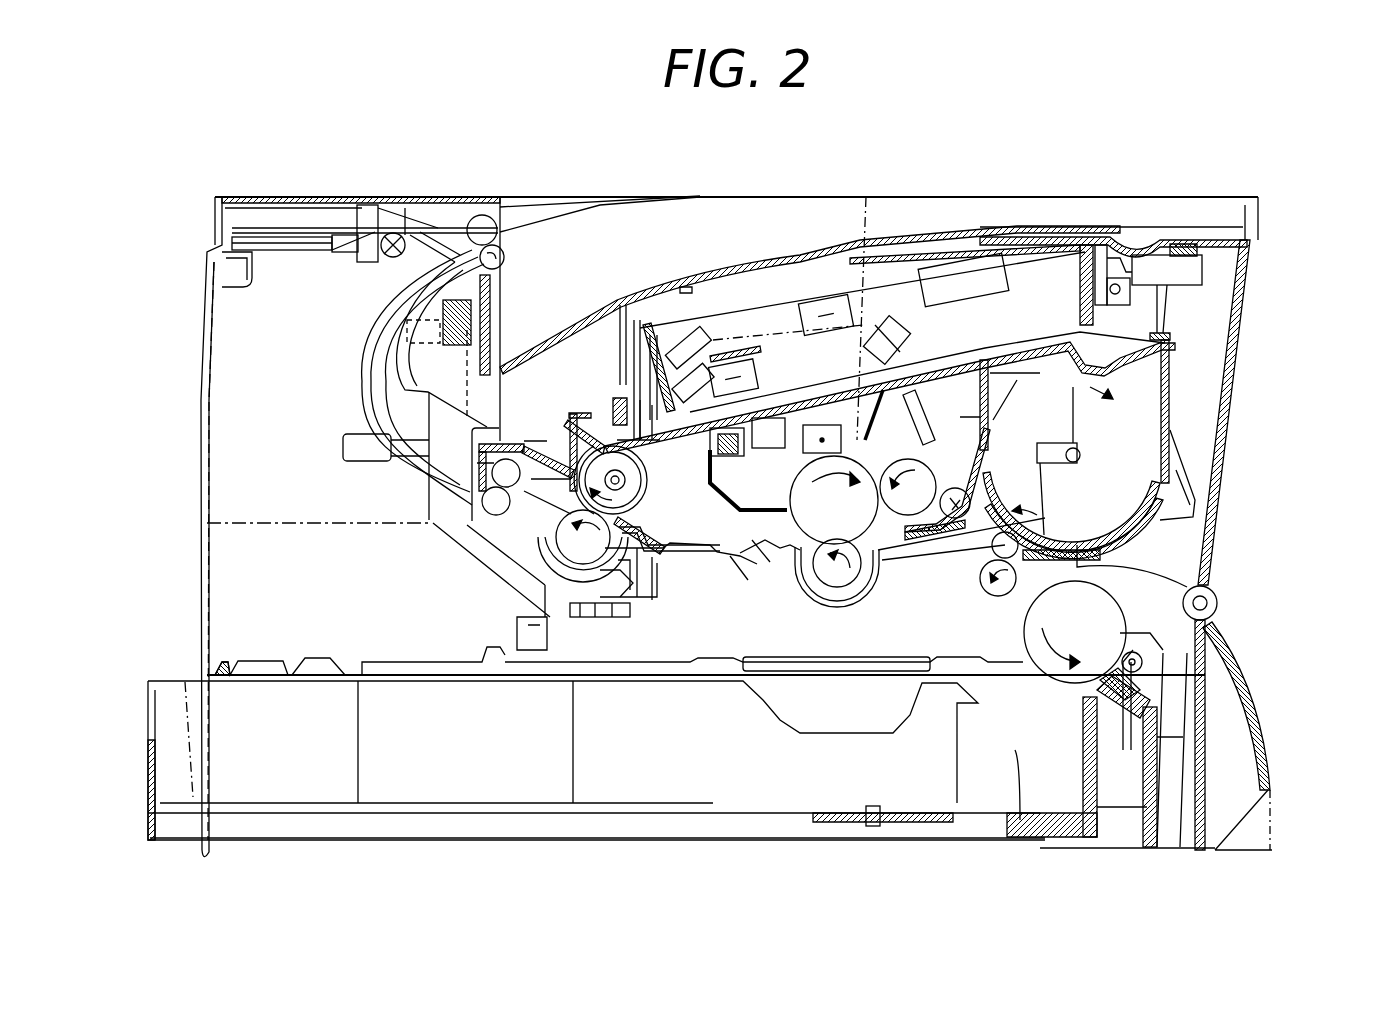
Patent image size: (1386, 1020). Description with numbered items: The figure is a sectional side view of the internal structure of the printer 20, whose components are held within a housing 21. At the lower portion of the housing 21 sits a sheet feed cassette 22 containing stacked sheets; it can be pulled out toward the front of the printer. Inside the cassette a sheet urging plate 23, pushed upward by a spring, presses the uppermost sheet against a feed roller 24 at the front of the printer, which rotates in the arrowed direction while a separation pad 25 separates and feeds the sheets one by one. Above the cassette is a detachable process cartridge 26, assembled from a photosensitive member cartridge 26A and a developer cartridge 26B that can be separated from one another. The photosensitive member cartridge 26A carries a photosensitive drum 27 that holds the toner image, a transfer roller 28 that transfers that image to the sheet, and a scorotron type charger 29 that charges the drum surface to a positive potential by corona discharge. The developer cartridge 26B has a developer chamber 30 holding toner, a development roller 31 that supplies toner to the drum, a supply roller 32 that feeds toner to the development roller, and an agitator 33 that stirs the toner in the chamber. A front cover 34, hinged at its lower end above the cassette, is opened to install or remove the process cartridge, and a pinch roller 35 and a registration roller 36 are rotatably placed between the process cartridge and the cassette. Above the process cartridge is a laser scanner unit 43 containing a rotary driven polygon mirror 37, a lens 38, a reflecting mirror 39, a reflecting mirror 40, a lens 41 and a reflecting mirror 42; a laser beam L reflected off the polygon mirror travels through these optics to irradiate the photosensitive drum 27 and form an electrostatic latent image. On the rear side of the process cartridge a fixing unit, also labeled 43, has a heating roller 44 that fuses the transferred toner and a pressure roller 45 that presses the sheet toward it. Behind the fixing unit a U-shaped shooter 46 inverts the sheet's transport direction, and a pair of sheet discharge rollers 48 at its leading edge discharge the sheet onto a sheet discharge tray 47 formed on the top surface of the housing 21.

The printer 20 is at (1062, 180).
The housing 21 is at (905, 197).
The sheet feed cassette 22 is at (1208, 805).
The sheet urging plate 23 is at (966, 835).
The feed roller 24 is at (1063, 680).
The separation pad 25 is at (1082, 685).
The process cartridge 26 is at (1183, 412).
The photosensitive member cartridge 26A is at (740, 553).
The developer cartridge 26B is at (1167, 367).
The photosensitive drum 27 is at (793, 553).
The transfer roller 28 is at (836, 582).
The scorotron type charger 29 is at (798, 462).
The developer chamber 30 is at (1145, 392).
The development roller 31 is at (935, 470).
The supply roller 32 is at (987, 483).
The agitator 33 is at (1050, 505).
The front cover 34 is at (1247, 367).
The pinch roller 35 is at (993, 548).
The registration roller 36 is at (987, 590).
The polygon mirror 37 is at (968, 293).
The lens 38 is at (833, 297).
The reflecting mirror 39 is at (718, 350).
The reflecting mirror 40 is at (710, 459).
The lens 41 is at (790, 355).
The reflecting mirror 42 is at (892, 335).
The laser scanner unit 43 is at (767, 292).
The heating roller 44 is at (640, 500).
The pressure roller 45 is at (567, 553).
The U-shaped shooter 46 is at (365, 333).
The sheet discharge tray 47 is at (712, 300).
The sheet discharge rollers 48 is at (505, 258).
The laser beam L is at (866, 197).